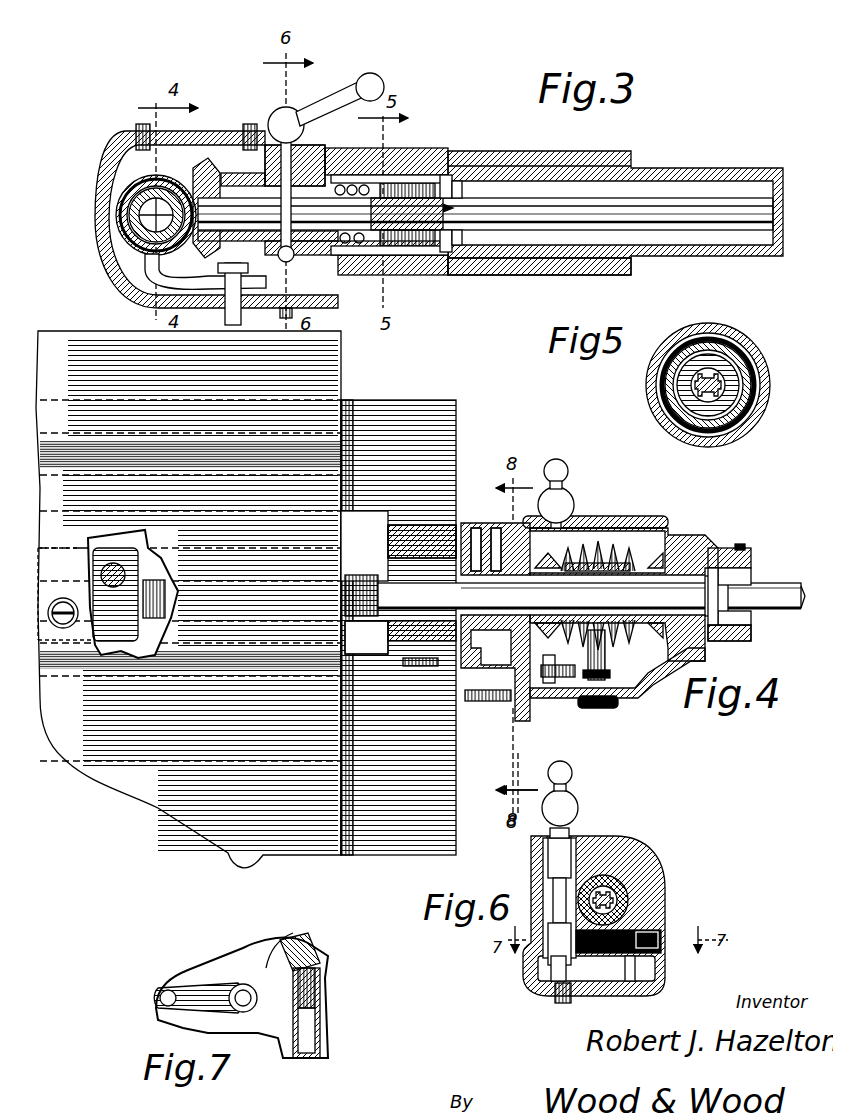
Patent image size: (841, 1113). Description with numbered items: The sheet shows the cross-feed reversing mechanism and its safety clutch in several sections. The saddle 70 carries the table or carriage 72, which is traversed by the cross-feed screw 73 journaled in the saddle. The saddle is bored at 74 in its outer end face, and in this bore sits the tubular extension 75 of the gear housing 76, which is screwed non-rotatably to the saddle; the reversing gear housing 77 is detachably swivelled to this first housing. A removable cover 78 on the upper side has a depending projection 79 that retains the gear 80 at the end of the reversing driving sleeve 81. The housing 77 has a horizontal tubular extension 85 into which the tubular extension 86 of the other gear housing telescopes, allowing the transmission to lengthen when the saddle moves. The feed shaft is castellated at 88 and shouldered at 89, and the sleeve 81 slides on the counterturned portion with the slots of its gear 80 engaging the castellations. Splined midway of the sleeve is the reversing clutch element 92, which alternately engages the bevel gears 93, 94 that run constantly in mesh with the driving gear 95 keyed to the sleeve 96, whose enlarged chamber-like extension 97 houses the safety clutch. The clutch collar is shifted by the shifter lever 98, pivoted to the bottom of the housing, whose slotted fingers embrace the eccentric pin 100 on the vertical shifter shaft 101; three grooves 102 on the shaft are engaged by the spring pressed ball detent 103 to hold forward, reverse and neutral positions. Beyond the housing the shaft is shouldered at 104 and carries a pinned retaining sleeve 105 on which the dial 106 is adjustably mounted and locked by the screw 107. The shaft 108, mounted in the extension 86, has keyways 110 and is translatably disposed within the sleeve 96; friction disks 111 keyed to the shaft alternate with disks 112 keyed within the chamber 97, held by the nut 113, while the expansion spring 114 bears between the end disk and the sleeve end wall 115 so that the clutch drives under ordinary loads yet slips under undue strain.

In FIG. 4, the saddle 70 is at (372, 398).
In FIG. 4, the table or carriage 72 is at (322, 363).
In FIG. 3, the cross-feed screw 73 is at (115, 230).
In FIG. 4, the cross-feed screw 73 is at (438, 648).
In FIG. 4, the bore 74 is at (380, 622).
In FIG. 4, the tubular extension 75 is at (380, 565).
In FIG. 4, the gear housing 76 is at (472, 694).
In FIG. 3, the reversing gear housing 77 is at (92, 222).
In FIG. 4, the reversing gear housing 77 is at (672, 530).
In FIG. 6, the reversing gear housing 77 is at (655, 868).
In FIG. 7, the reversing gear housing 77 is at (225, 950).
In FIG. 4, the removable cover 78 is at (468, 518).
In FIG. 4, the depending projection 79 is at (490, 518).
In FIG. 4, the gear 80 is at (491, 647).
In FIG. 4, the reversing driving sleeve 81 is at (660, 657).
In FIG. 3, the tubular extension 85 is at (458, 268).
In FIG. 3, the tubular extension 86 is at (655, 160).
In FIG. 6, the tubular extension 86 is at (613, 872).
In FIG. 4, the castellations 88 is at (450, 573).
In FIG. 4, the shoulder 89 is at (480, 592).
In FIG. 4, the reversing clutch element 92 is at (620, 555).
In FIG. 4, the bevel gear 93 is at (555, 550).
In FIG. 4, the bevel gear 94 is at (612, 650).
In FIG. 3, the driving gear 95 is at (205, 155).
In FIG. 4, the driving gear 95 is at (588, 555).
In FIG. 3, the sleeve 96 is at (300, 178).
In FIG. 3, the chamber-like extension 97 is at (438, 165).
In FIG. 3, the shifter lever 98 is at (150, 277).
In FIG. 4, the shifter lever 98 is at (560, 670).
In FIG. 7, the shifter lever 98 is at (185, 978).
In FIG. 3, the eccentric pin 100 is at (262, 278).
In FIG. 4, the eccentric pin 100 is at (540, 676).
In FIG. 6, the eccentric pin 100 is at (540, 960).
In FIG. 7, the eccentric pin 100 is at (300, 930).
In FIG. 3, the shifter shaft 101 is at (296, 115).
In FIG. 4, the shifter shaft 101 is at (566, 490).
In FIG. 6, the shifter shaft 101 is at (575, 832).
In FIG. 7, the shifter shaft 101 is at (285, 930).
In FIG. 7, the grooves 102 is at (308, 965).
In FIG. 3, the spring pressed ball detent 103 is at (300, 262).
In FIG. 6, the spring pressed ball detent 103 is at (575, 948).
In FIG. 7, the spring pressed ball detent 103 is at (312, 980).
In FIG. 4, the shoulder 104 is at (720, 540).
In FIG. 4, the retaining sleeve 105 is at (708, 633).
In FIG. 4, the dial 106 is at (705, 558).
In FIG. 4, the screw 107 is at (735, 538).
In FIG. 3, the shaft 108 is at (485, 214).
In FIG. 6, the shaft 108 is at (609, 886).
In FIG. 3, the keyways 110 is at (446, 203).
In FIG. 6, the keyways 110 is at (620, 897).
In FIG. 3, the friction disks 111 is at (388, 175).
In FIG. 3, the disks 112 is at (420, 176).
In FIG. 3, the nut 113 is at (452, 165).
In FIG. 3, the expansion spring 114 is at (352, 167).
In FIG. 3, the sleeve shoulder or end wall 115 is at (407, 214).